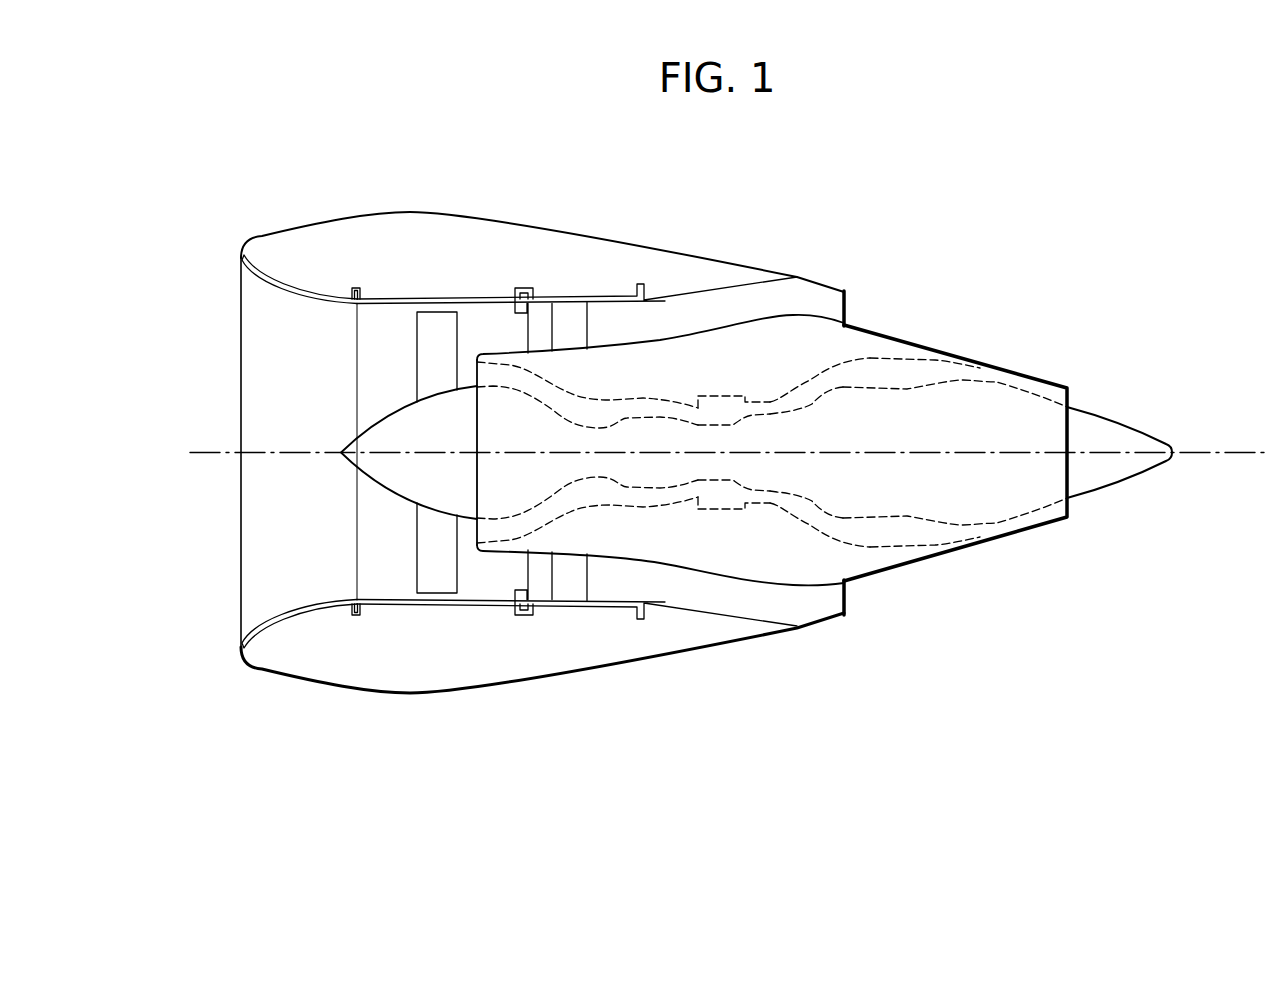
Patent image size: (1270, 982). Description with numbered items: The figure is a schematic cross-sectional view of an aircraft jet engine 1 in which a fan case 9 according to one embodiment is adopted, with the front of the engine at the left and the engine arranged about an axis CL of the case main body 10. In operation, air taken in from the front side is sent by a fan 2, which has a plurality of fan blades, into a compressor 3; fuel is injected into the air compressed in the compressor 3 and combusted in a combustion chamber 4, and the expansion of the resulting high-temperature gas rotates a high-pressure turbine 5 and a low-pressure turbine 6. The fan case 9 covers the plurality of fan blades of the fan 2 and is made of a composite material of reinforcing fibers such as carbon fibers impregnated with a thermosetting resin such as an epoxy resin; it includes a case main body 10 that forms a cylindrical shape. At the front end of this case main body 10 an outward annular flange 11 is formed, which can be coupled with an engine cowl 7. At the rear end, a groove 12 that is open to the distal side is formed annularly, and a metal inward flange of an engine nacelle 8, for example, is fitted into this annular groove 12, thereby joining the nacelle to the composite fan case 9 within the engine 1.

The aircraft jet engine 1 is at (904, 252).
The fan 2 is at (403, 517).
The compressor 3 is at (588, 490).
The combustion chamber 4 is at (738, 505).
The high-pressure turbine 5 is at (797, 503).
The low-pressure turbine 6 is at (907, 530).
The engine cowl 7 is at (284, 283).
The engine nacelle 8 is at (605, 295).
The fan case 9 is at (462, 290).
The case main body 10 is at (422, 305).
The outward annular flange 11 is at (362, 290).
The groove 12 is at (504, 309).
The axis CL is at (1210, 449).